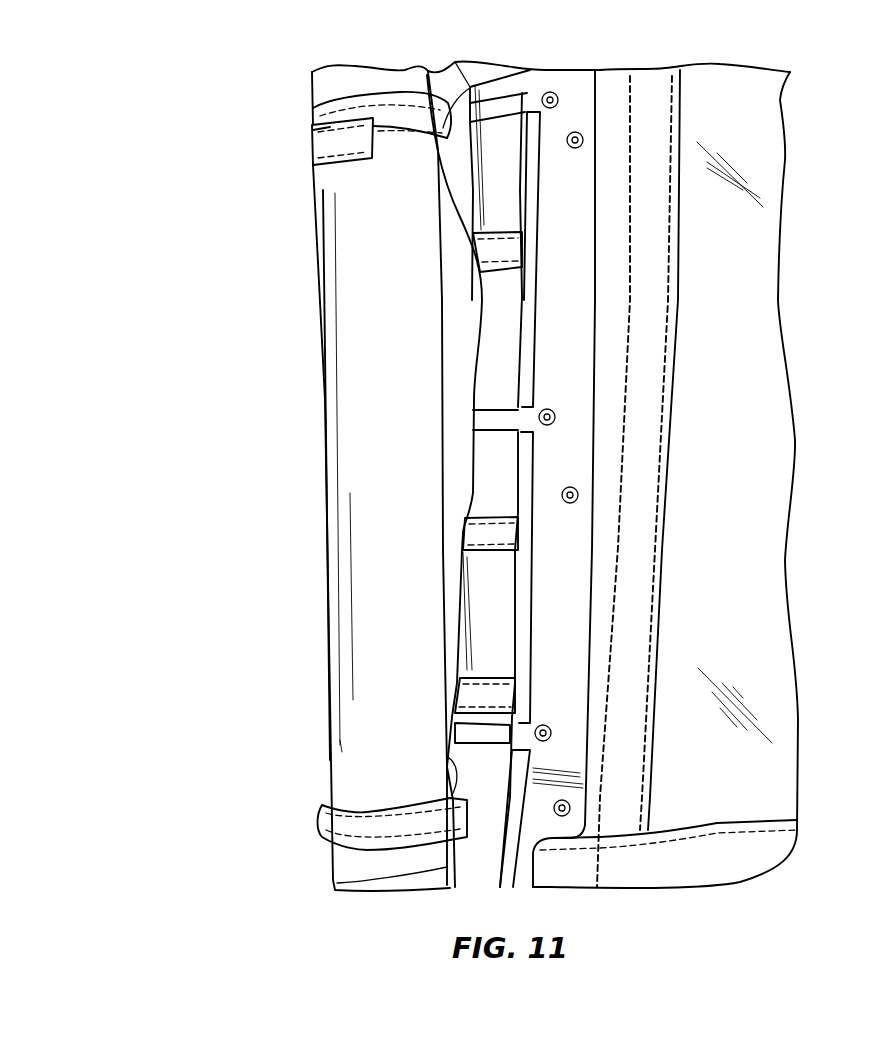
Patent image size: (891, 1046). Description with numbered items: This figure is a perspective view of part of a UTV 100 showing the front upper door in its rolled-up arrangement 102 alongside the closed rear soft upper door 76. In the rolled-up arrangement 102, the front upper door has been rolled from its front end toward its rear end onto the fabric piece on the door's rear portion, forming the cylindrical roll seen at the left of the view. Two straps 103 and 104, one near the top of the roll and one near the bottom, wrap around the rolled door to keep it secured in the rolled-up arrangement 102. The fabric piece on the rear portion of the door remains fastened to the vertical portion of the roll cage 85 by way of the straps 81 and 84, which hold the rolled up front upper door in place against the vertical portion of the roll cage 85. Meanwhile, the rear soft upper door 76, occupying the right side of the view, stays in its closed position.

The UTV 100 is at (214, 81).
The rear soft upper door 76 is at (787, 486).
The rolled-up arrangement 102 is at (348, 468).
The strap 103 is at (333, 147).
The strap 104 is at (337, 823).
The vertical portion of the roll cage 85 is at (505, 333).
The strap 84 is at (503, 249).
The strap 81 is at (497, 533).